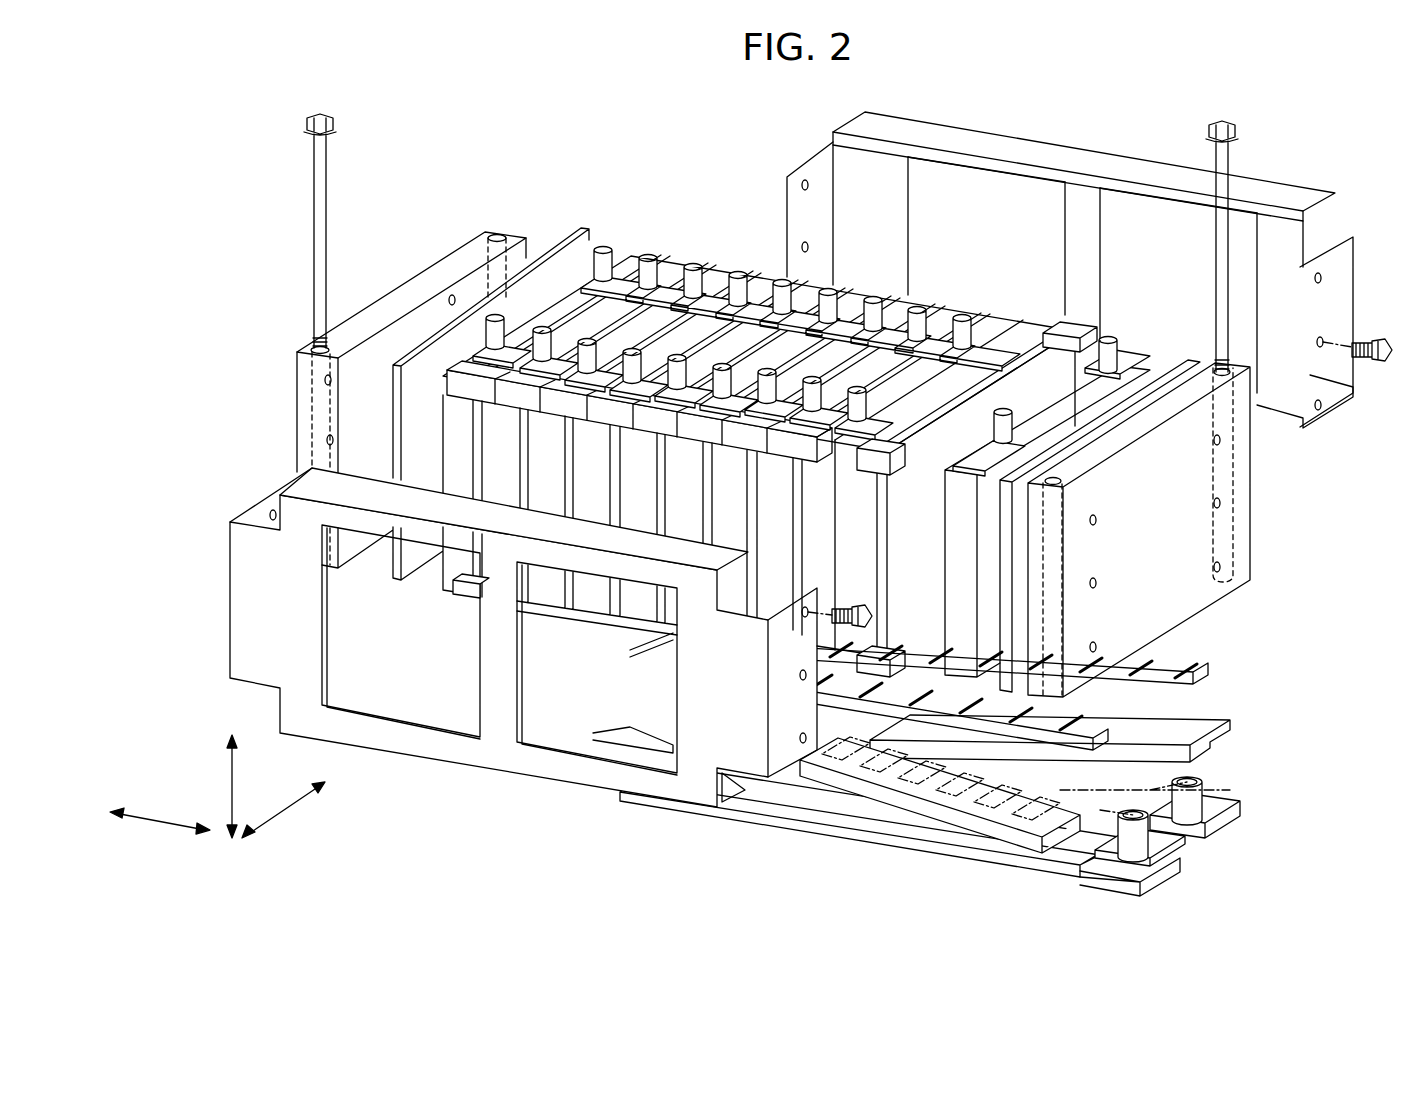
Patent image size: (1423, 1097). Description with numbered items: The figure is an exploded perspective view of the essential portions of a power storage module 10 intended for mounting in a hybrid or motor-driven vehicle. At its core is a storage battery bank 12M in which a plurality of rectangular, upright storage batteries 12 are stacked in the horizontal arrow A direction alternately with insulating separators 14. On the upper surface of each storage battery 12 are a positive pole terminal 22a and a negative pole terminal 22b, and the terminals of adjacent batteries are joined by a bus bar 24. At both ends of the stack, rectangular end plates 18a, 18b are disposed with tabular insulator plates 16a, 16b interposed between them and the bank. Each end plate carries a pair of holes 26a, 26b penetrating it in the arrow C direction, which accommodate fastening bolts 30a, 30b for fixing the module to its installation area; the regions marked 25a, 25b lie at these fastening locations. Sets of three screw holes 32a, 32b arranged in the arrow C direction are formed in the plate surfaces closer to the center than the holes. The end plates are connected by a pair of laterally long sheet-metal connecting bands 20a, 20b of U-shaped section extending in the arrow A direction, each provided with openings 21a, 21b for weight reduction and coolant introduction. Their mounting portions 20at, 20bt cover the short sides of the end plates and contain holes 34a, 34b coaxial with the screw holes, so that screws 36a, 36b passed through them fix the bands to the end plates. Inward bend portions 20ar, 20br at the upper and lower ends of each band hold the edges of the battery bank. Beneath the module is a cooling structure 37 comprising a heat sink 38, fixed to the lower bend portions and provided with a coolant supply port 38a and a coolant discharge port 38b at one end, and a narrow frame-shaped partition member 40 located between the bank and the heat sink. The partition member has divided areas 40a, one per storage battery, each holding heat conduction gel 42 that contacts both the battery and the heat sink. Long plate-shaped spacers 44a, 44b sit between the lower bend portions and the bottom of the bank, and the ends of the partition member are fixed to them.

The power storage module 10 is at (736, 92).
The storage battery 12 is at (633, 305).
The storage battery bank 12M is at (792, 421).
The separator 14 is at (523, 475).
The insulator plate 16a is at (1007, 637).
The insulator plate 16b is at (580, 242).
The end plate 18a is at (1191, 502).
The end plate 18b is at (362, 332).
The connecting band 20a is at (553, 673).
The bend portion 20ar is at (687, 557).
The mounting portion 20at is at (263, 517).
The connecting band 20b is at (1077, 310).
The bend portion 20br is at (1258, 195).
The mounting portion 20bt is at (818, 168).
The opening 21a is at (327, 597).
The opening 21b is at (912, 168).
The positive pole terminal 22a is at (958, 315).
The negative pole terminal 22b is at (855, 412).
The bus bar 24 is at (980, 327).
The fastening portion 25a is at (1214, 313).
The fastening portion 25b is at (297, 285).
The hole 26a is at (1063, 478).
The hole 26b is at (497, 234).
The fastening bolt 30a is at (1222, 235).
The fastening bolt 30b is at (322, 161).
The screw hole 32a is at (1095, 580).
The screw hole 32b is at (452, 300).
The hole 34a is at (273, 522).
The hole 34b is at (810, 186).
The screw 36a is at (853, 610).
The screw 36b is at (1383, 365).
The cooling structure 37 is at (1172, 653).
The heat sink 38 is at (951, 834).
The coolant supply port 38a is at (1138, 850).
The coolant discharge port 38b is at (1190, 817).
The partition member 40 is at (867, 688).
The divided area 40a is at (1167, 673).
The heat conduction gel 42 is at (1161, 819).
The spacer 44a is at (980, 837).
The spacer 44b is at (1228, 733).